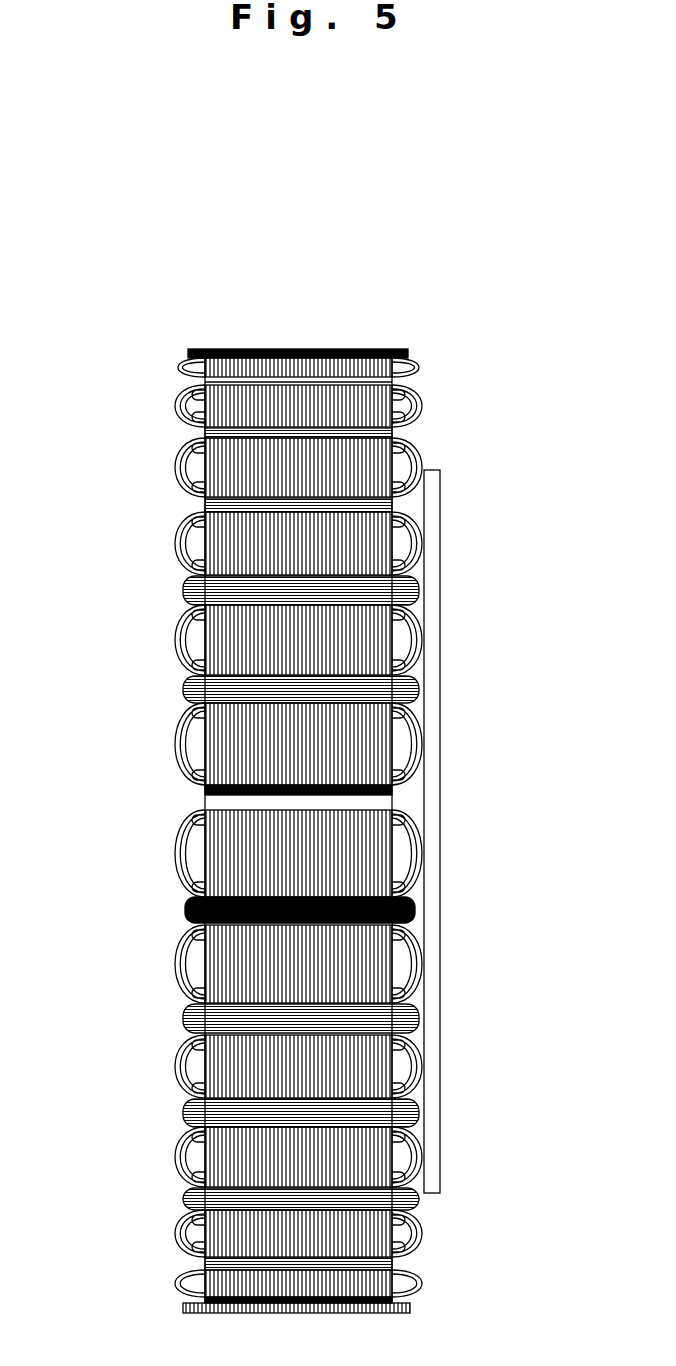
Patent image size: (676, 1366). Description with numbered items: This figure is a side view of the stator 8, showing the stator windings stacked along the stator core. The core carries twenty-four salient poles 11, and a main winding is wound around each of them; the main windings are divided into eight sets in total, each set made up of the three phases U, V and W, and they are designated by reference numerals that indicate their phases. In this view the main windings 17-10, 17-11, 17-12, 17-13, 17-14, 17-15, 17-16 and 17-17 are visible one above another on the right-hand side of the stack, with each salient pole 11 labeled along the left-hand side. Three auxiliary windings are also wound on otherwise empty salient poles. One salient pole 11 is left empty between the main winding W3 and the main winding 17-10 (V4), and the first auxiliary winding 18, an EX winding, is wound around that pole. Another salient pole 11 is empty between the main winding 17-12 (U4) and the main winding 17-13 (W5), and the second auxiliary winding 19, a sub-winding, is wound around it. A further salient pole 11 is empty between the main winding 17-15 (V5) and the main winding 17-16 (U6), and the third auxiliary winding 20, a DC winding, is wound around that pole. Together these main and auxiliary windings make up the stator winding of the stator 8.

The stator 8 is at (478, 306).
The salient pole 11 is at (213, 410).
The main winding 17-10 is at (425, 1215).
The main winding 17-11 is at (425, 1115).
The main winding 17-12 is at (425, 1020).
The main winding 17-13 is at (425, 857).
The main winding 17-14 is at (423, 738).
The main winding 17-15 is at (425, 677).
The main winding 17-16 is at (425, 495).
The main winding 17-17 is at (425, 428).
The first auxiliary winding 18 is at (422, 1278).
The second auxiliary winding 19 is at (425, 928).
The third auxiliary winding 20 is at (425, 587).